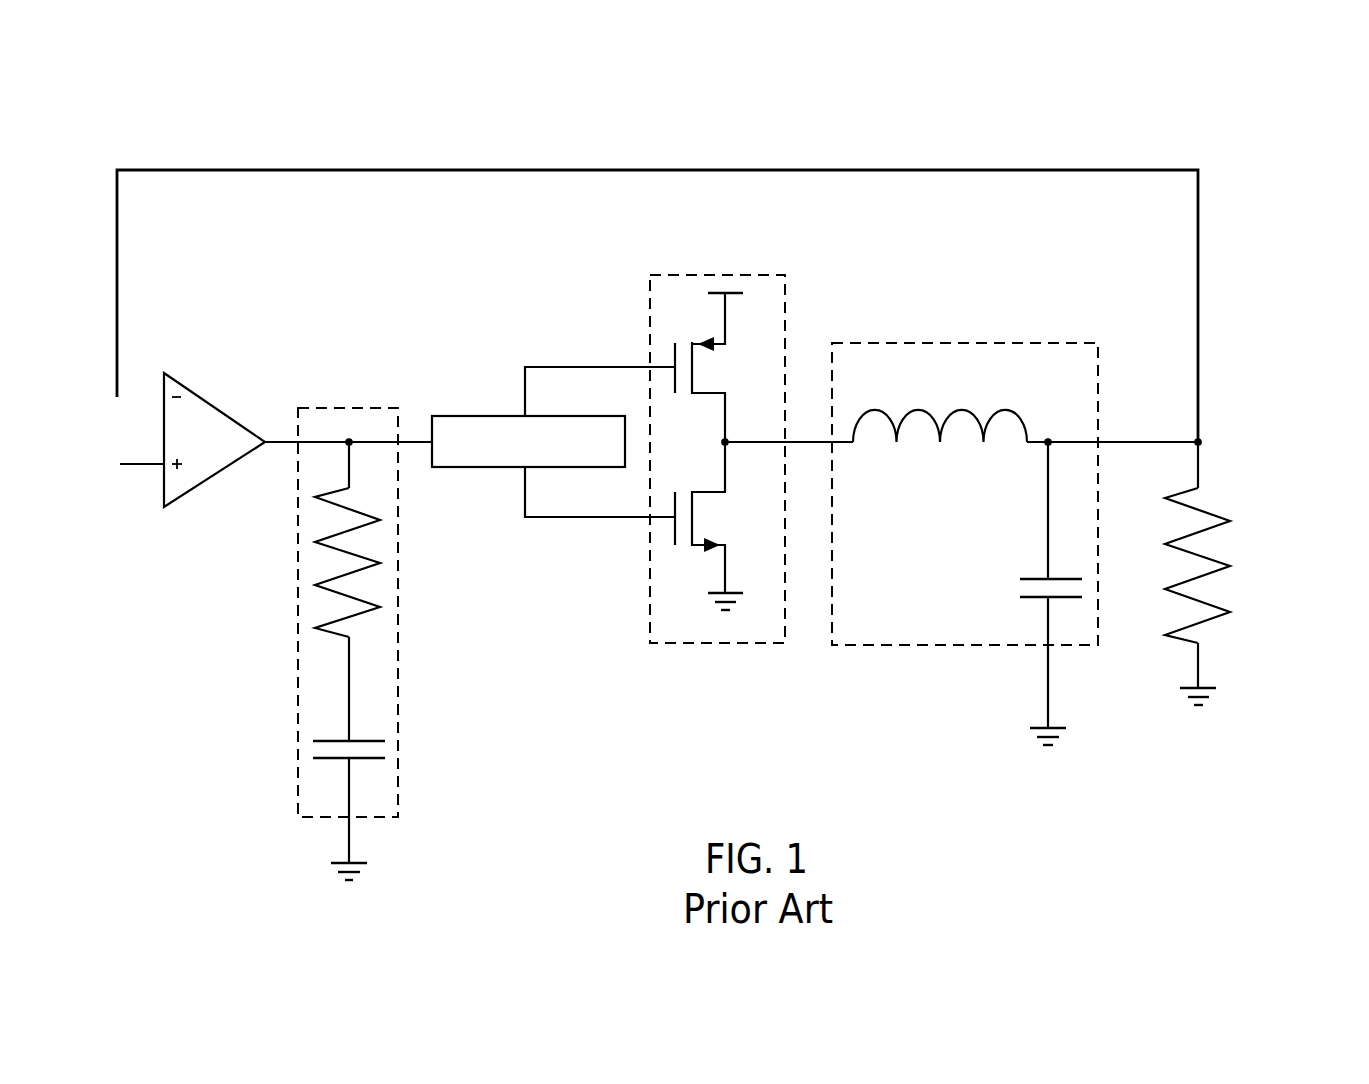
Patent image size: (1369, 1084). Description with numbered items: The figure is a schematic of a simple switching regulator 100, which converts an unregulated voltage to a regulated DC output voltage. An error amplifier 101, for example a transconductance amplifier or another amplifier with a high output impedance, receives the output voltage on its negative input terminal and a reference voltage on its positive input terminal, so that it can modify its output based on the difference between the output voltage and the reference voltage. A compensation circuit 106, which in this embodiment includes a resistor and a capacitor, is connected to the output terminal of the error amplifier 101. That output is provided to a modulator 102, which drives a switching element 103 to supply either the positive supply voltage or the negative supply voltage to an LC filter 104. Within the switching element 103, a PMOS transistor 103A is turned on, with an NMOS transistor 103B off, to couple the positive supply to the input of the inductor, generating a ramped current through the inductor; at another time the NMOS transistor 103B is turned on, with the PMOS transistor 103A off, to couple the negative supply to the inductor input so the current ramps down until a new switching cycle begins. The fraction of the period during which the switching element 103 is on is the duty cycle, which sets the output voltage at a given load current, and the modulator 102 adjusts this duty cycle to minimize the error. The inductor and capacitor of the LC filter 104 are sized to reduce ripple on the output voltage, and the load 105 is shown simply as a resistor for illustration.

The switching regulator 100 is at (175, 84).
The error amplifier 101 is at (214, 435).
The modulator 102 is at (553, 442).
The switching element 103 is at (717, 435).
The PMOS transistor 103A is at (719, 367).
The NMOS transistor 103B is at (719, 526).
The LC filter 104 is at (965, 544).
The load 105 is at (1251, 573).
The compensation circuit 106 is at (377, 644).